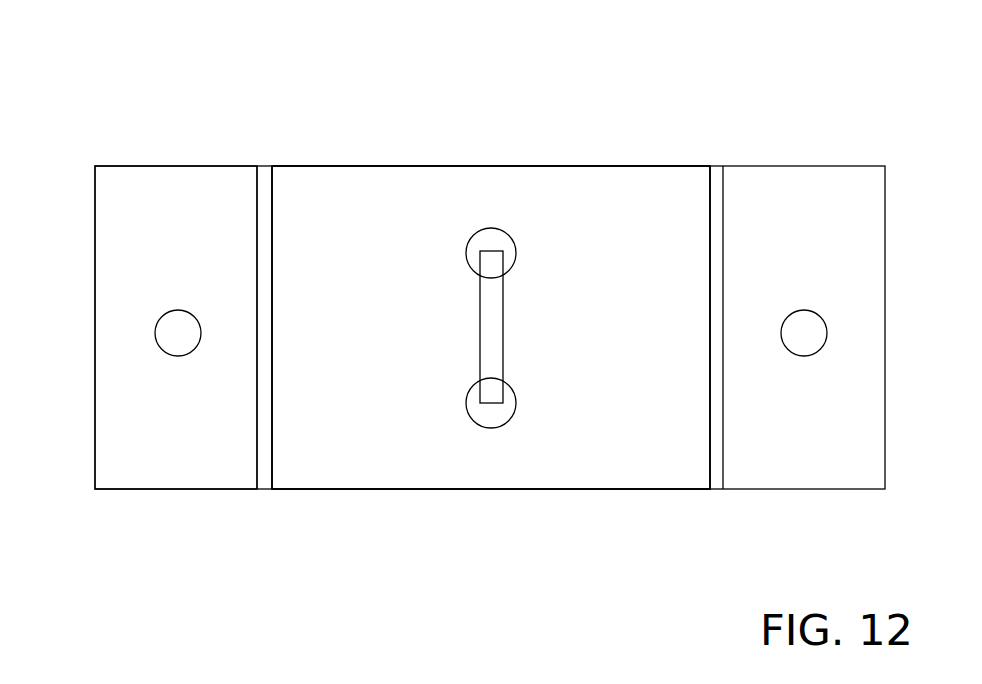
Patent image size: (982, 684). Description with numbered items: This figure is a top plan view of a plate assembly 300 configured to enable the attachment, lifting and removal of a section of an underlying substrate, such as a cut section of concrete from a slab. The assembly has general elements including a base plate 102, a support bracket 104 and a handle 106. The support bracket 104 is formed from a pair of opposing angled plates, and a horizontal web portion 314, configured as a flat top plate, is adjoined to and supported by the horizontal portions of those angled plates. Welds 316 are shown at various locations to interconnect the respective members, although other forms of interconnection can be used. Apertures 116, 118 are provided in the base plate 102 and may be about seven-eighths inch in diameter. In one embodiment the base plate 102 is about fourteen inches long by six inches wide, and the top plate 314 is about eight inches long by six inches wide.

The plate assembly 300 is at (822, 58).
The base plate 102 is at (157, 192).
The support bracket 104 is at (322, 143).
The horizontal web portion 314 is at (367, 213).
The welds 316 is at (257, 208).
The handle 106 is at (494, 312).
The aperture 116 is at (182, 310).
The aperture 118 is at (805, 310).